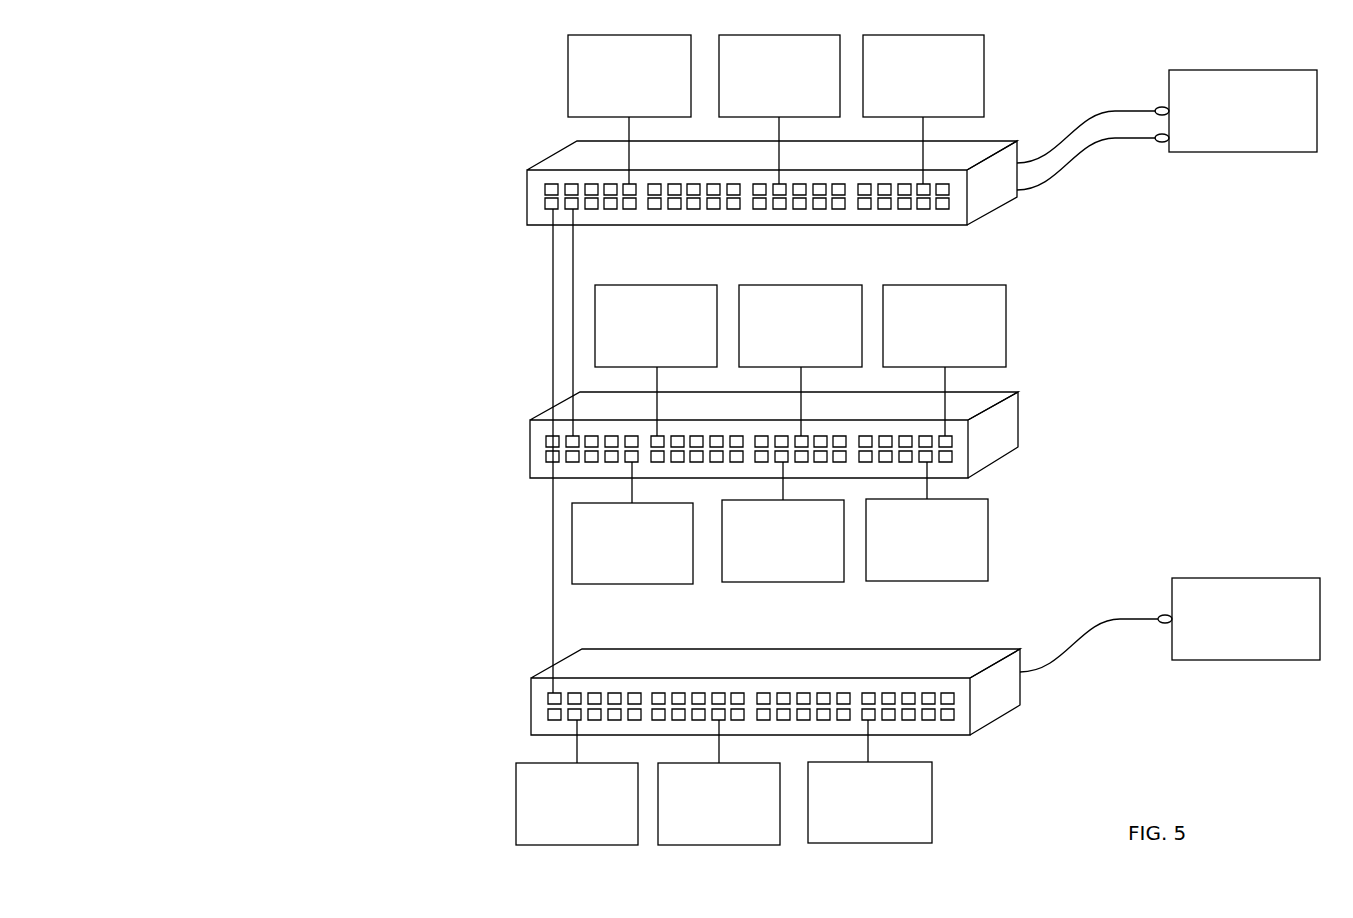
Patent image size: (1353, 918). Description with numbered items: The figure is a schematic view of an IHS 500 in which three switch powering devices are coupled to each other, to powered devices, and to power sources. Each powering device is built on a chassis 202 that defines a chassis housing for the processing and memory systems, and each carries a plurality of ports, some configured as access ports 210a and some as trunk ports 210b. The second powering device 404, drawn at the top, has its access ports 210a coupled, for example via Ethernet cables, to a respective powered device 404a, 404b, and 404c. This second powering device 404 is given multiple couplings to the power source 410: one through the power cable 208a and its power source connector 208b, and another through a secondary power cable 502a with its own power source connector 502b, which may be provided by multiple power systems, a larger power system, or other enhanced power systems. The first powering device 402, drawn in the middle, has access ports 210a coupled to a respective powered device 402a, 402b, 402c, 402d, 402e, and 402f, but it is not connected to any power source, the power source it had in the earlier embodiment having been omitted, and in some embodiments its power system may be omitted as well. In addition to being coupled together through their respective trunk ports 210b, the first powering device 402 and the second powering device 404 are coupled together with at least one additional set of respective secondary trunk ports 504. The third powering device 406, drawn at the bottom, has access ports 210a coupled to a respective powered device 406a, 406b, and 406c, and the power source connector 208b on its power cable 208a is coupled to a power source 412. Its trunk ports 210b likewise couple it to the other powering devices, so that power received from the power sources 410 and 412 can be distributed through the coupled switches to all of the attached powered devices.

The IHS 500 is at (280, 113).
The second powering device 404 is at (542, 155).
The first powering device 402 is at (535, 405).
The third powering device 406 is at (535, 668).
The chassis 202 is at (1017, 197).
The access ports 210a is at (633, 185).
The trunk ports 210b is at (545, 206).
The secondary trunk ports 504 is at (578, 212).
The powered device 404a is at (629, 109).
The powered device 404b is at (779, 109).
The powered device 404c is at (923, 109).
The powered device 402a is at (656, 360).
The powered device 402b is at (800, 360).
The powered device 402c is at (944, 360).
The powered device 402d is at (632, 523).
The powered device 402e is at (783, 522).
The powered device 402f is at (927, 521).
The powered device 406a is at (577, 782).
The powered device 406b is at (719, 782).
The powered device 406c is at (870, 781).
The power source 410 is at (1243, 111).
The power source 412 is at (1246, 619).
The power cable 208a is at (1099, 117).
The power source connector 208b is at (1162, 105).
The secondary power cable 502a is at (1097, 145).
The power source connector 502b is at (1163, 142).